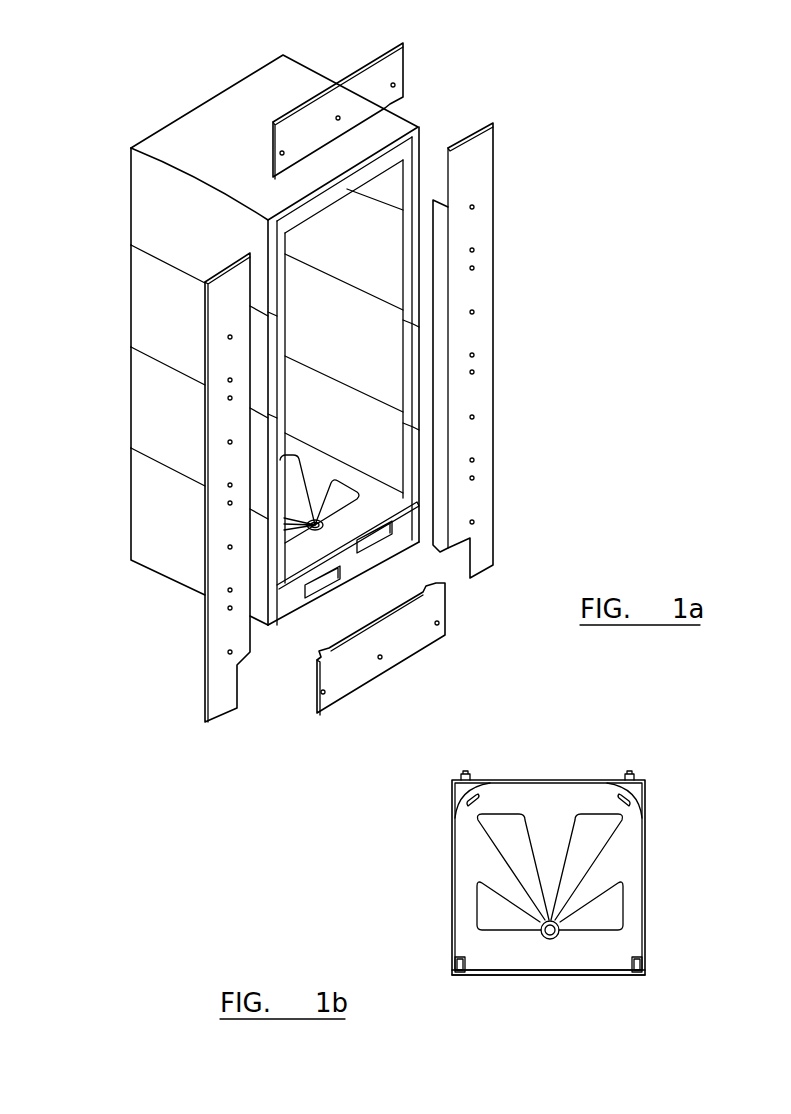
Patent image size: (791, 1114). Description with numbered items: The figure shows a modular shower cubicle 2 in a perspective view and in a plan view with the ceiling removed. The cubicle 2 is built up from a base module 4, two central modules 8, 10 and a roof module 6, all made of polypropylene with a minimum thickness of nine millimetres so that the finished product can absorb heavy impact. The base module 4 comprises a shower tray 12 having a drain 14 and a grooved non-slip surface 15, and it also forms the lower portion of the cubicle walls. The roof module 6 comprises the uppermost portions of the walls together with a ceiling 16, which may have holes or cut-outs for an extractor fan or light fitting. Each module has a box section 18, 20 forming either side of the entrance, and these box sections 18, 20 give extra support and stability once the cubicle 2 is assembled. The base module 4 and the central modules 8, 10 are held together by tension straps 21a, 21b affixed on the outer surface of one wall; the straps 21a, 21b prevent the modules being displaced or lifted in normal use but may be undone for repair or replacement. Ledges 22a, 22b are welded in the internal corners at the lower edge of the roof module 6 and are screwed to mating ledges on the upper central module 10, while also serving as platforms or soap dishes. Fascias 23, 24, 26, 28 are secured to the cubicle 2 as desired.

In FIG. 1A, the modular shower cubicle 2 is at (318, 393).
In FIG. 1A, the base module 4 is at (160, 518).
In FIG. 1A, the roof module 6 is at (166, 212).
In FIG. 1A, the central module 8 is at (160, 412).
In FIG. 1A, the upper central module 10 is at (160, 312).
In FIG. 1A, the shower tray 12 is at (370, 512).
In FIG. 1B, the shower tray 12 is at (512, 952).
In FIG. 1A, the drain 14 is at (313, 530).
In FIG. 1B, the drain 14 is at (547, 940).
In FIG. 1A, the grooved non-slip surface 15 is at (350, 484).
In FIG. 1B, the grooved non-slip surface 15 is at (597, 858).
In FIG. 1A, the ceiling 16 is at (238, 113).
In FIG. 1A, the box section 18 is at (415, 343).
In FIG. 1B, the box section 18 is at (648, 958).
In FIG. 1A, the box section 20 is at (284, 489).
In FIG. 1B, the box section 20 is at (453, 963).
In FIG. 1B, the tension strap 21a is at (465, 772).
In FIG. 1B, the tension strap 21b is at (630, 773).
In FIG. 1B, the ledge 22a is at (463, 800).
In FIG. 1B, the ledge 22b is at (635, 799).
In FIG. 1A, the fascia 23 is at (400, 638).
In FIG. 1A, the fascia 24 is at (370, 80).
In FIG. 1B, the fascia 24 is at (598, 977).
In FIG. 1A, the fascia 26 is at (222, 633).
In FIG. 1A, the fascia 28 is at (472, 167).